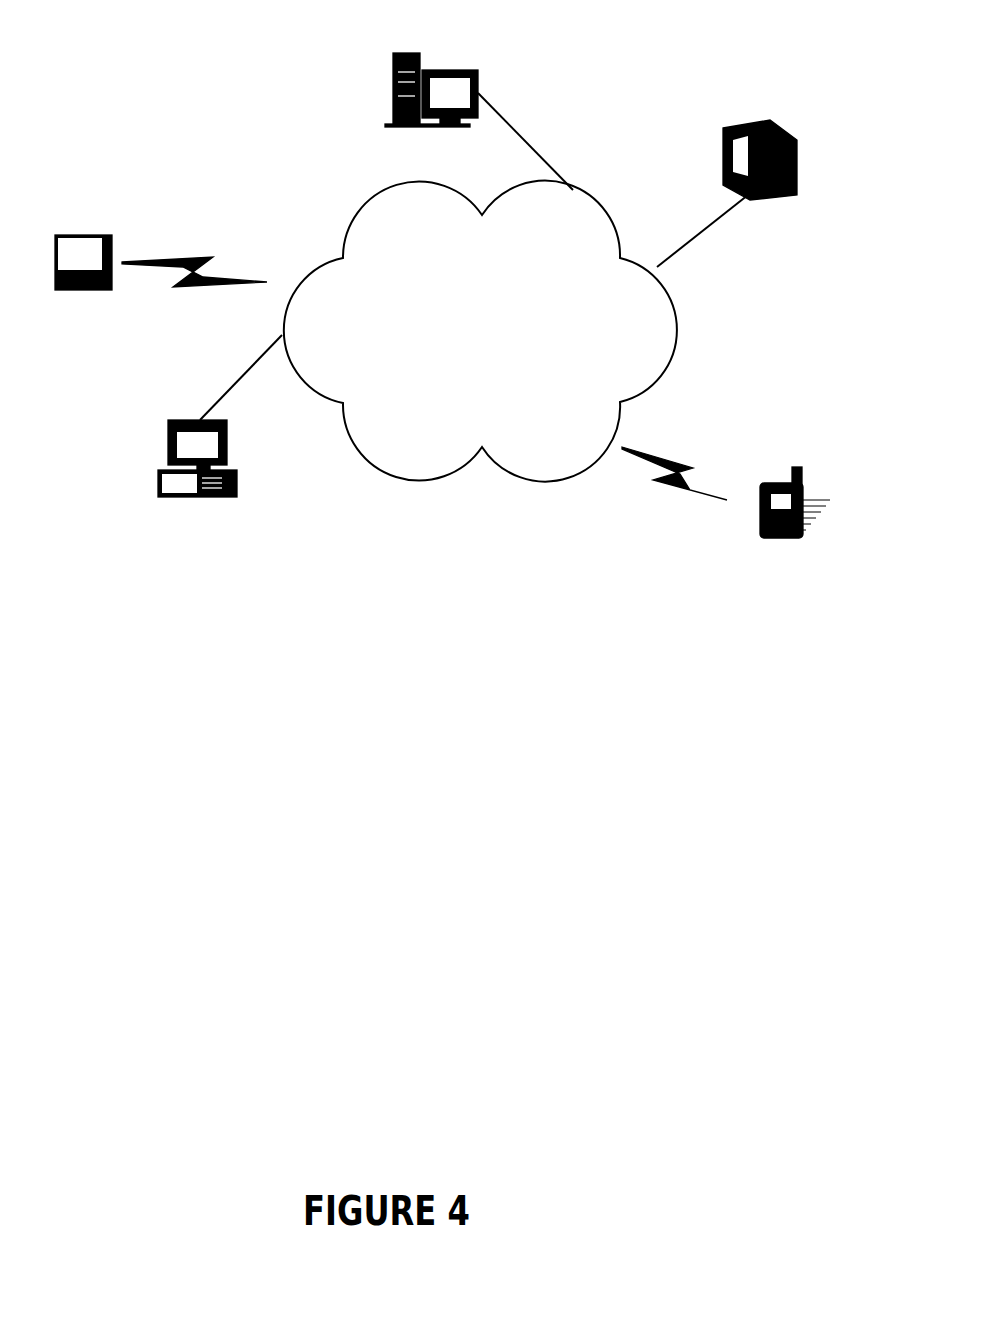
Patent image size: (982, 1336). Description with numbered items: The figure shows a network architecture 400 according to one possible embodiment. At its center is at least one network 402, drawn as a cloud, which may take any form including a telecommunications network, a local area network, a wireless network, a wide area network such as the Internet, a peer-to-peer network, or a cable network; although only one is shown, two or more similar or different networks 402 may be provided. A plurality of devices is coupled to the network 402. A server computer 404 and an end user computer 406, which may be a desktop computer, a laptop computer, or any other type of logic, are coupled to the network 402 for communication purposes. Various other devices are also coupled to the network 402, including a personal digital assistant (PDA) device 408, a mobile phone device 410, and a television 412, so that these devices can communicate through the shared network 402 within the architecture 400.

The network architecture 400 is at (392, 772).
The network 402 is at (540, 480).
The server computer 404 is at (393, 92).
The end user computer 406 is at (158, 475).
The personal digital assistant (PDA) device 408 is at (83, 234).
The mobile phone device 410 is at (757, 483).
The television 412 is at (720, 122).